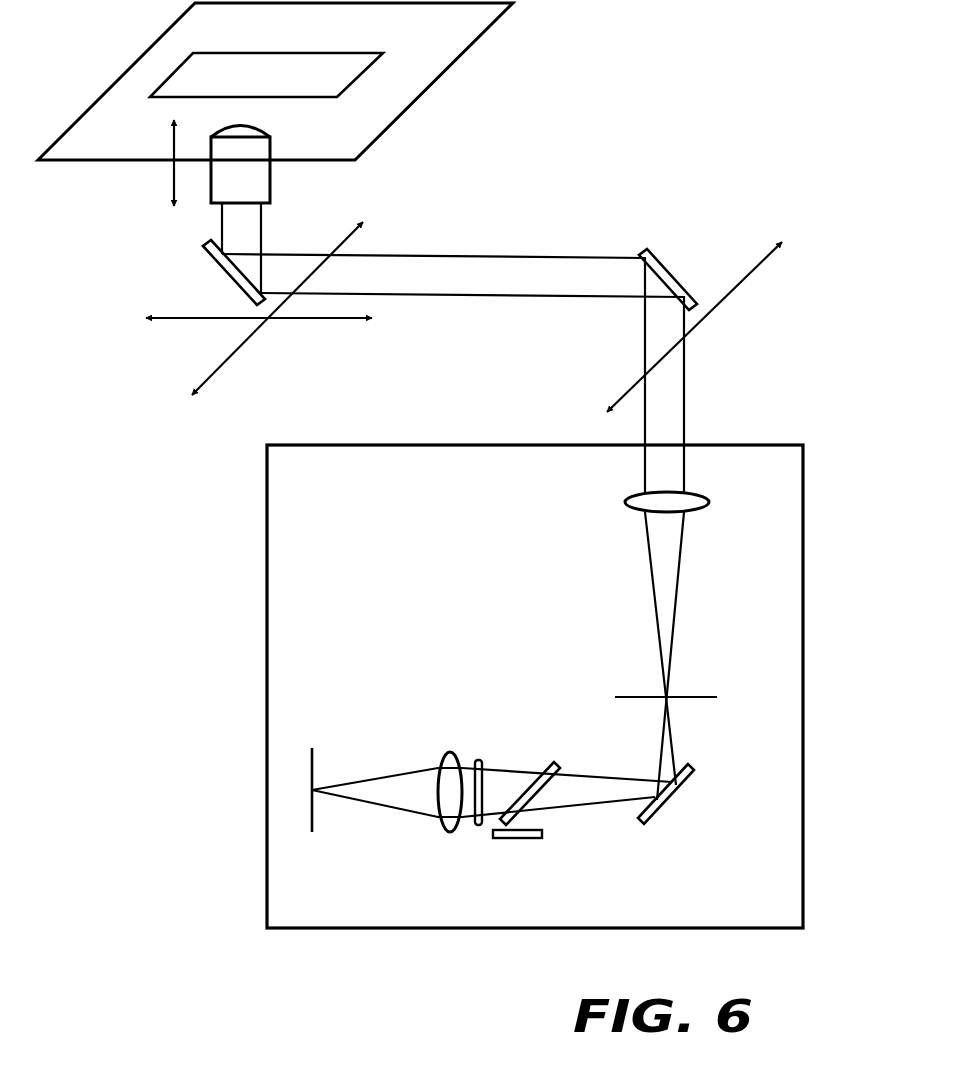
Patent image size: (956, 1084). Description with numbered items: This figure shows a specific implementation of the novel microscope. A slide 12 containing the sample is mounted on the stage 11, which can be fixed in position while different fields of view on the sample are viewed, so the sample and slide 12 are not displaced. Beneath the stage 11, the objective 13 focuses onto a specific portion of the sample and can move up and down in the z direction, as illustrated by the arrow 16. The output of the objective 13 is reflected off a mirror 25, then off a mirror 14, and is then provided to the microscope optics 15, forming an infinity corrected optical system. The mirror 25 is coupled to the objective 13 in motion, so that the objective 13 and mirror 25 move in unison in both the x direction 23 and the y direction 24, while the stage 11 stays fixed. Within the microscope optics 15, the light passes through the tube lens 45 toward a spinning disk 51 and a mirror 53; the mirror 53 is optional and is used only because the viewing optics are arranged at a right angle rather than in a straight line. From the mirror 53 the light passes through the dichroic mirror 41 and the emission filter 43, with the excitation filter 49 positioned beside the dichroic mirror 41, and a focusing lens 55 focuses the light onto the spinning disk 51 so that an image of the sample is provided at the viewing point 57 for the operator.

The stage 11 is at (473, 32).
The slide 12 is at (357, 62).
The objective 13 is at (270, 175).
The mirror 14 is at (668, 270).
The microscope optics 15 is at (803, 667).
The arrow 16 is at (173, 170).
The x direction 23 is at (337, 325).
The y direction 24 is at (225, 365).
The mirror 25 is at (230, 278).
The dichroic mirror 41 is at (557, 760).
The emission filter 43 is at (478, 760).
The tube lens 45 is at (708, 503).
The excitation filter 49 is at (518, 840).
The spinning disk 51 is at (680, 698).
The mirror 53 is at (670, 800).
The focusing lens 55 is at (452, 835).
The viewing point 57 is at (315, 797).